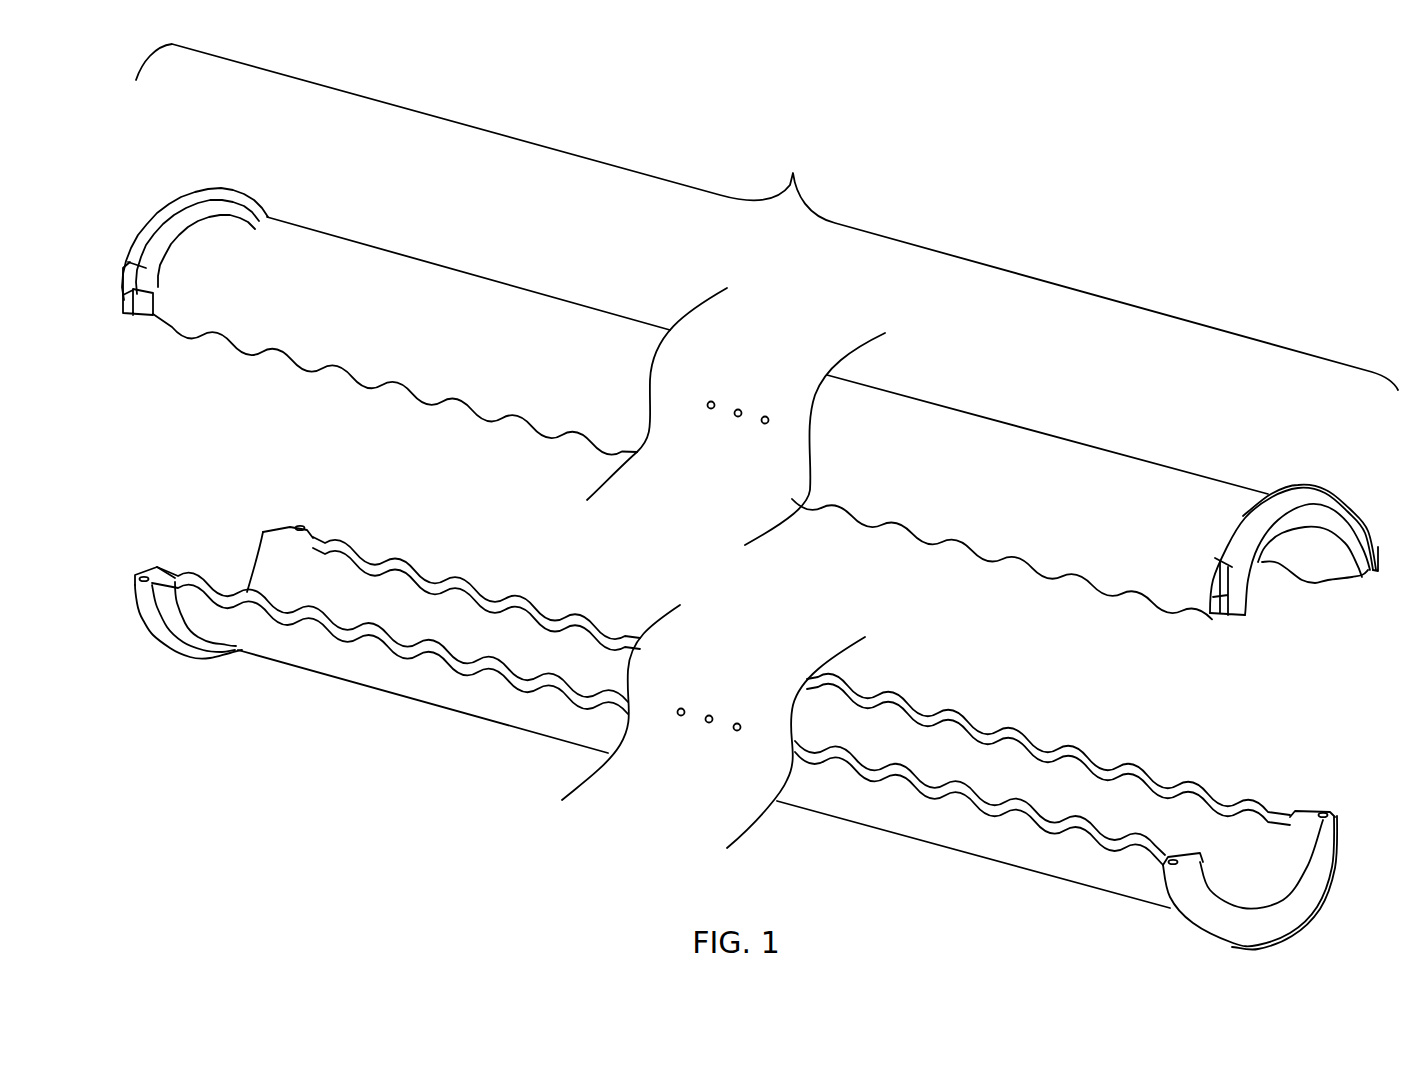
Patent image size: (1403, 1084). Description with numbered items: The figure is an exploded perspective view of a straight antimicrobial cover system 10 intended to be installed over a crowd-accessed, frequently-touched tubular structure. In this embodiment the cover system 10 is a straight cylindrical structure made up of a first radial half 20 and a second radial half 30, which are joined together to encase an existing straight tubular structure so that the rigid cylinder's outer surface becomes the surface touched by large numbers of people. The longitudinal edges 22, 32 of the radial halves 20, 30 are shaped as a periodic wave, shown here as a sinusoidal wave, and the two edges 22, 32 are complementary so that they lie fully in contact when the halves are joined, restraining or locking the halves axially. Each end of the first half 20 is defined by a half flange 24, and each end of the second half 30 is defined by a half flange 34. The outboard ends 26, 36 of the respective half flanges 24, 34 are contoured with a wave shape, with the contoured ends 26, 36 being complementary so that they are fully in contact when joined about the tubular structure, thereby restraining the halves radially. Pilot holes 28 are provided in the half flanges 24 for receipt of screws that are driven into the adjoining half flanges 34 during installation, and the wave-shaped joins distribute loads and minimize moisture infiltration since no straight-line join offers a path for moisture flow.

The antimicrobial cover system 10 is at (767, 217).
The first radial half 20 is at (537, 271).
The longitudinal edge 22 is at (407, 393).
The half flange 24 is at (212, 188).
The outboard end 26 is at (142, 316).
The pilot holes 28 is at (127, 275).
The second radial half 30 is at (490, 754).
The longitudinal edge 32 is at (448, 573).
The half flange 34 is at (207, 658).
The outboard end 36 is at (146, 576).